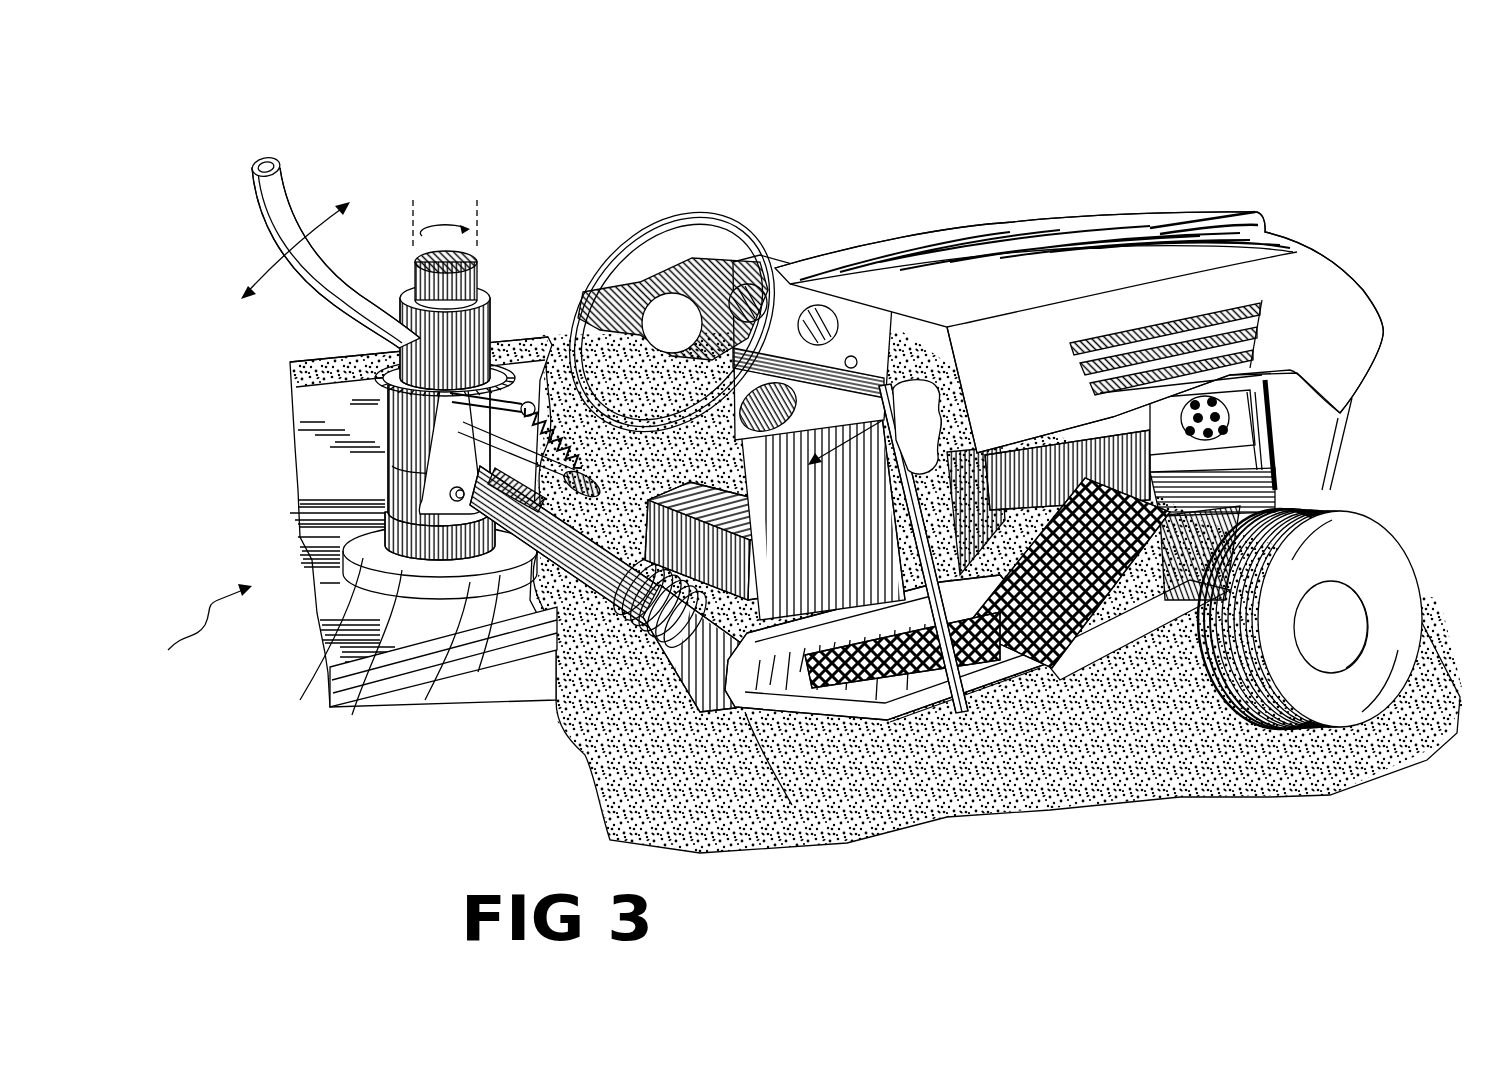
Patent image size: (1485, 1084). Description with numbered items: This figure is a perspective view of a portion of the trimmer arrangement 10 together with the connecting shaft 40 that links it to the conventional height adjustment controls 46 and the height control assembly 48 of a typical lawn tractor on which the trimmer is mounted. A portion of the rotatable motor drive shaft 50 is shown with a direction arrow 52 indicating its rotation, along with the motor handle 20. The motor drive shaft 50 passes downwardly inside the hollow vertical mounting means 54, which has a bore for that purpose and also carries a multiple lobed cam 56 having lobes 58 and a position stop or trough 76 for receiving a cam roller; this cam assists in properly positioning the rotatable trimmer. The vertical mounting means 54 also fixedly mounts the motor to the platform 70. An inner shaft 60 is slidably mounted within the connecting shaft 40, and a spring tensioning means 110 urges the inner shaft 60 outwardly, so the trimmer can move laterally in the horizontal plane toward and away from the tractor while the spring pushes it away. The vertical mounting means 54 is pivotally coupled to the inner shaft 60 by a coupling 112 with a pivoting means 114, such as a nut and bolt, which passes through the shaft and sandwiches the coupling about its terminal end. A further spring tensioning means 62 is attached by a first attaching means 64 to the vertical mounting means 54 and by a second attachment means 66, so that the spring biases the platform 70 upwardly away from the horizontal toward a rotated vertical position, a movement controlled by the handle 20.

The trimmer arrangement 10 is at (184, 634).
The motor handle 20 is at (255, 193).
The connecting shaft 40 is at (697, 680).
The height adjustment controls 46 is at (917, 433).
The height control assembly 48 is at (783, 690).
The motor drive shaft 50 is at (480, 264).
The direction arrow 52 is at (427, 222).
The vertical mounting means 54 is at (410, 441).
The multiple lobed cam 56 is at (330, 667).
The lobes 58 is at (367, 553).
The inner shaft 60 is at (566, 560).
The spring tensioning means 62 is at (543, 398).
The first attaching means 64 is at (494, 356).
The second attachment means 66 is at (580, 478).
The platform 70 is at (303, 390).
The position stop or trough 76 is at (354, 712).
The spring tensioning means 110 is at (648, 666).
The coupling 112 is at (440, 470).
The pivoting means 114 is at (398, 518).